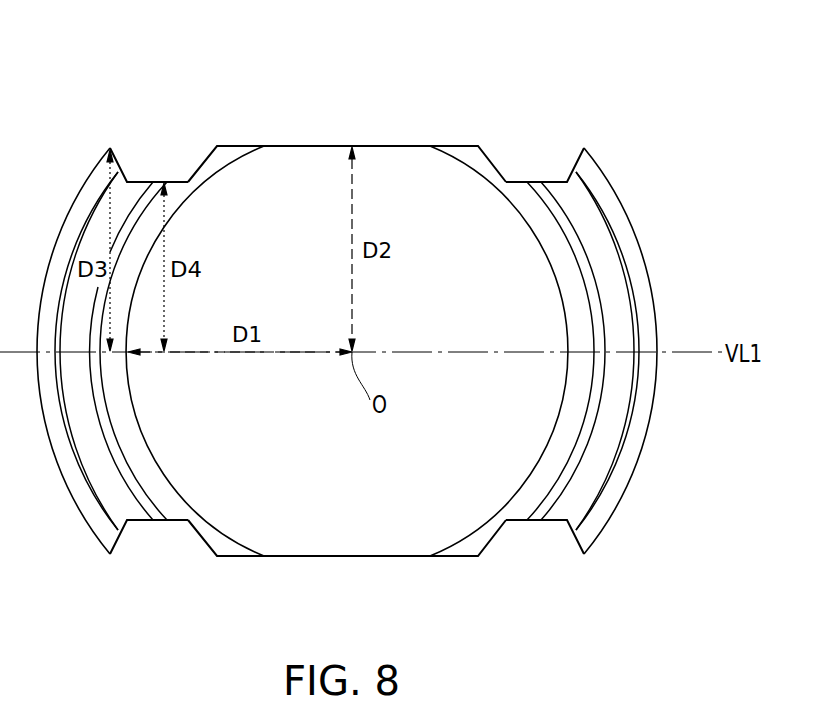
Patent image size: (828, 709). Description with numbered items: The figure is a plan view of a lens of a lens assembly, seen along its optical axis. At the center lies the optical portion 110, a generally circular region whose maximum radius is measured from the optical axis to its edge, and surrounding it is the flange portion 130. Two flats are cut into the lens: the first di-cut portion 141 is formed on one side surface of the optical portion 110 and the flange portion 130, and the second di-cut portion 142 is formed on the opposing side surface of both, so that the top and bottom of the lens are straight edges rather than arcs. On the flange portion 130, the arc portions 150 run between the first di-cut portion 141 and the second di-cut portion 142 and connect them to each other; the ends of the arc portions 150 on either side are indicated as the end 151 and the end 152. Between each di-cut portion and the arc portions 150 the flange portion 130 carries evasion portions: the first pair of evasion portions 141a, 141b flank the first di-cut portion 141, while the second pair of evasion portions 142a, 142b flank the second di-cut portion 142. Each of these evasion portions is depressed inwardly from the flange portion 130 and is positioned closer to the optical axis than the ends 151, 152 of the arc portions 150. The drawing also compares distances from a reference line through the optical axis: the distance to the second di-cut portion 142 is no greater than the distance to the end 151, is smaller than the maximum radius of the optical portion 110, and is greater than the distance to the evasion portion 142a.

The optical portion 110 is at (528, 433).
The flange portion 130 is at (617, 420).
The first di-cut portion 141 is at (378, 558).
The 1-1-th evasion portion 141a is at (157, 521).
The 1-2-th evasion portion 141b is at (537, 521).
The second di-cut portion 142 is at (415, 146).
The 2-1-th evasion portion 142a is at (173, 181).
The 2-2-th evasion portion 142b is at (547, 181).
The arc portions 150 is at (643, 278).
The end of one side of the arc portions 151 is at (112, 148).
The end of the other side of the arc portions 152 is at (582, 149).